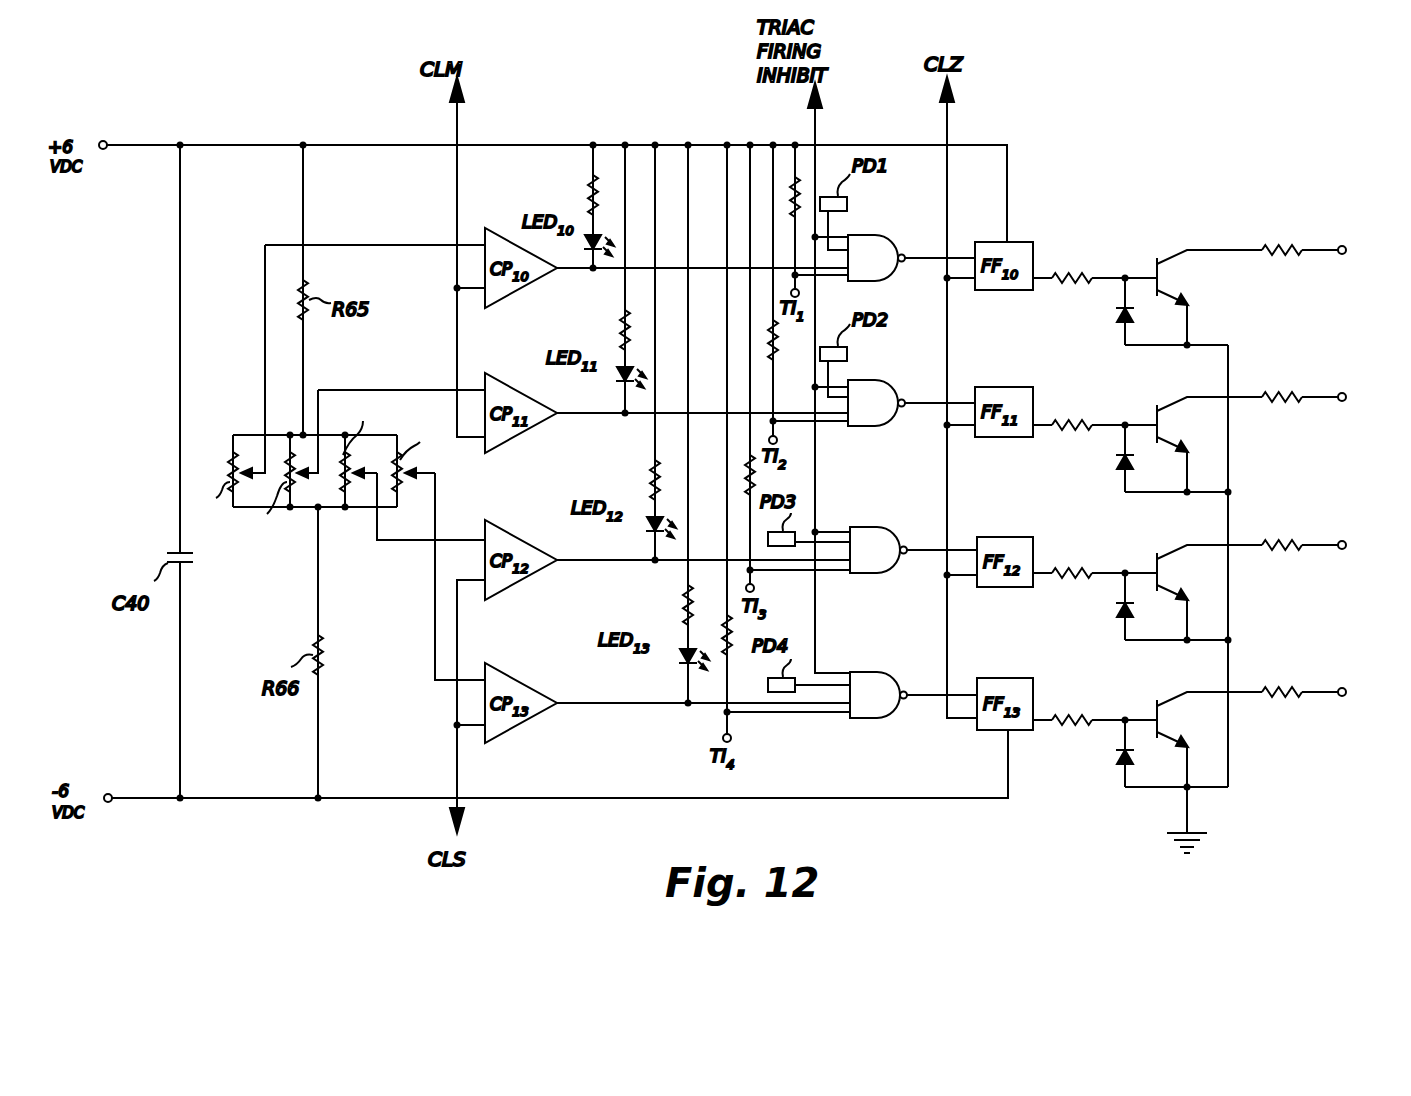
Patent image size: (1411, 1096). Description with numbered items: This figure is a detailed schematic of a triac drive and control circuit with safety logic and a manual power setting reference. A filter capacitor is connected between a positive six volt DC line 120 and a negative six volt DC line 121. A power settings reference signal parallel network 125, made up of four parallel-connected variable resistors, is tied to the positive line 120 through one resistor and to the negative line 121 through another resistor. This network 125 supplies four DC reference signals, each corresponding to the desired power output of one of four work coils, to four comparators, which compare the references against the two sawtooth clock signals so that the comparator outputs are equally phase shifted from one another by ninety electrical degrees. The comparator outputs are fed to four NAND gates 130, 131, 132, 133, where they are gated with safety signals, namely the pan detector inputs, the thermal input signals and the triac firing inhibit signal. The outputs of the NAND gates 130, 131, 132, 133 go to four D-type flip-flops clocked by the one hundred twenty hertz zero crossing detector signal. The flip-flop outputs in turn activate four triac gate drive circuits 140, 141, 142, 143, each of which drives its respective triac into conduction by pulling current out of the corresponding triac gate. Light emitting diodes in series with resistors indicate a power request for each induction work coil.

The +6 VDC line 120 is at (145, 145).
The −6 VDC line 121 is at (140, 800).
The power settings reference signal parallel network 125 is at (244, 428).
The NAND gate 130 is at (880, 234).
The NAND gate 131 is at (880, 427).
The NAND gate 132 is at (882, 574).
The NAND gate 133 is at (882, 719).
The triac gate drive circuit 140 is at (1190, 240).
The triac gate drive circuit 141 is at (1190, 387).
The triac gate drive circuit 142 is at (1190, 535).
The triac gate drive circuit 143 is at (1190, 682).